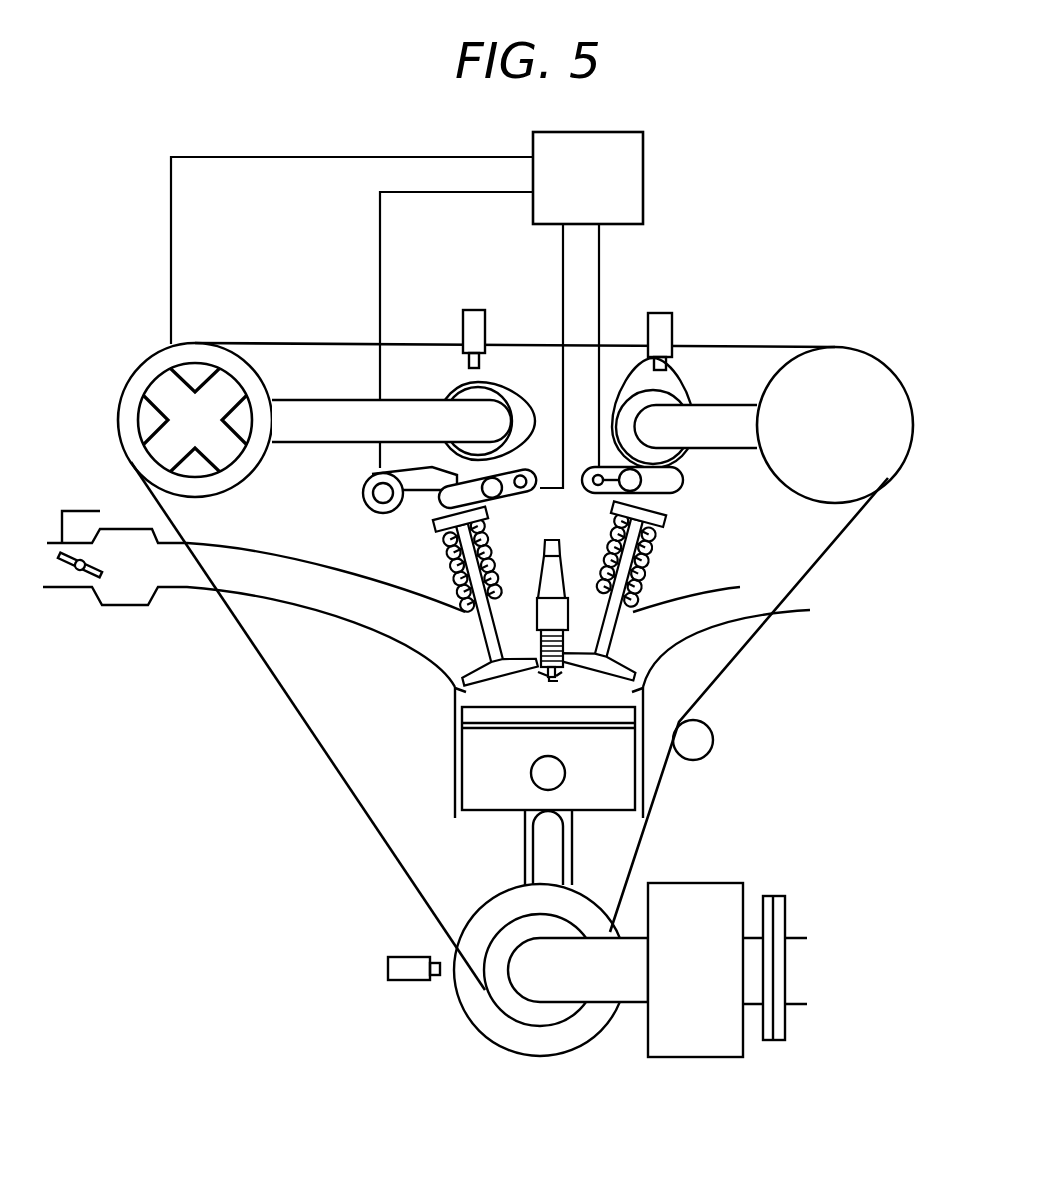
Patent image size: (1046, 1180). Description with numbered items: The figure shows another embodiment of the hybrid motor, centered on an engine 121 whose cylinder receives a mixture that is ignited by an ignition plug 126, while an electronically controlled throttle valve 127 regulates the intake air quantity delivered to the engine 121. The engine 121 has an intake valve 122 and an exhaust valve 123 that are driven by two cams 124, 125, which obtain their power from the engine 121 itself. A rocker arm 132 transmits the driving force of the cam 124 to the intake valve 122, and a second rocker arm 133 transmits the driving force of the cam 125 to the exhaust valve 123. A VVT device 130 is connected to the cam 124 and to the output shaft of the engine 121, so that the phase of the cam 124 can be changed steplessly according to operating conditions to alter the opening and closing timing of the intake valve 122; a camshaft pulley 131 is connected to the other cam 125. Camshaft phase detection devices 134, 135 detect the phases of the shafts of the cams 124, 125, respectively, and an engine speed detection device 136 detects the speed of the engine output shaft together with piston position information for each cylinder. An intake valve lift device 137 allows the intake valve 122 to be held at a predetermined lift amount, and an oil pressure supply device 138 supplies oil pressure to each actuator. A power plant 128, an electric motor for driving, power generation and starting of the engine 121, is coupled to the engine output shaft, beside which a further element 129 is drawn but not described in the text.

The engine 121 is at (447, 693).
The intake valve 122 is at (437, 578).
The exhaust valve 123 is at (668, 583).
The cam 124 is at (460, 382).
The cam 125 is at (690, 382).
The ignition plug 126 is at (565, 565).
The electronically controlled throttle valve 127 is at (75, 522).
The power plant 128 is at (695, 892).
The flywheel 129 is at (783, 905).
The VVT device 130 is at (152, 360).
The camshaft pulley 131 is at (868, 377).
The rocker arm 132 is at (520, 497).
The rocker arm 133 is at (660, 487).
The camshaft phase detection device 134 is at (476, 330).
The camshaft phase detection device 135 is at (660, 330).
The engine speed detection device 136 is at (405, 968).
The intake valve lift device 137 is at (363, 492).
The oil pressure supply device 138 is at (645, 156).